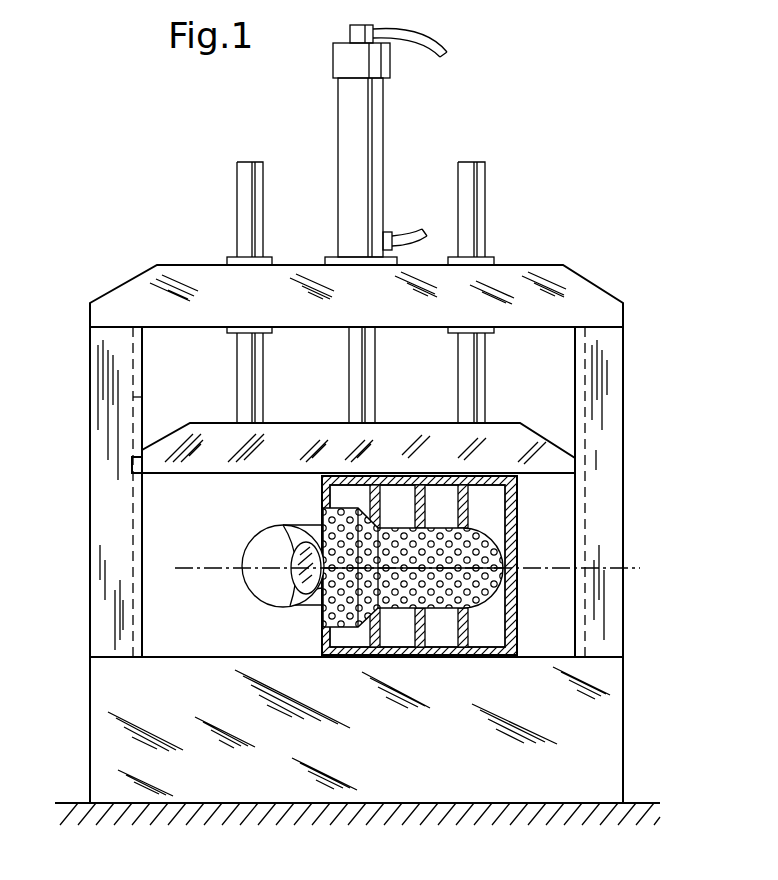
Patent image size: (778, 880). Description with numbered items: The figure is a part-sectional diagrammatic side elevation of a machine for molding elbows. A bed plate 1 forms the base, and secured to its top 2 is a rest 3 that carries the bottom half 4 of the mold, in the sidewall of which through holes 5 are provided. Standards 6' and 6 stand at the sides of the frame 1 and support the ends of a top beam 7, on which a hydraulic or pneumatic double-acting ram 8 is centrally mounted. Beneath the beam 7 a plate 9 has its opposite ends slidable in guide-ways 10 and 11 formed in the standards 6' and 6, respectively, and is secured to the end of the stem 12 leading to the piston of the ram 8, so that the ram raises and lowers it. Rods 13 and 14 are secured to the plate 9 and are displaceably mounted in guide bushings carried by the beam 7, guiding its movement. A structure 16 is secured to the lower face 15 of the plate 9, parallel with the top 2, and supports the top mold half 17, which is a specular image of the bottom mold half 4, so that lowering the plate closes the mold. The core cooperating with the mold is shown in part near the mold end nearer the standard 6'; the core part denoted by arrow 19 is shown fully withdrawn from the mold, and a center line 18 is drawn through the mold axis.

The bed plate 1 is at (603, 768).
The top of the bed plate 2 is at (205, 657).
The rest 3 is at (512, 612).
The bottom mold half 4 is at (508, 578).
The through holes 5 is at (393, 602).
The standard 6 is at (615, 553).
The standard 6' is at (140, 553).
The top beam 7 is at (165, 284).
The double-acting ram 8 is at (363, 137).
The plate 9 is at (507, 438).
The guide-way 10 is at (142, 399).
The guide-way 11 is at (583, 355).
The stem 12 is at (362, 385).
The rod 13 is at (247, 208).
The rod 14 is at (470, 196).
The lower face of the plate 15 is at (204, 477).
The structure 16 is at (512, 508).
The top mold half 17 is at (500, 562).
The center line 18 is at (612, 580).
The core part 19 is at (259, 522).